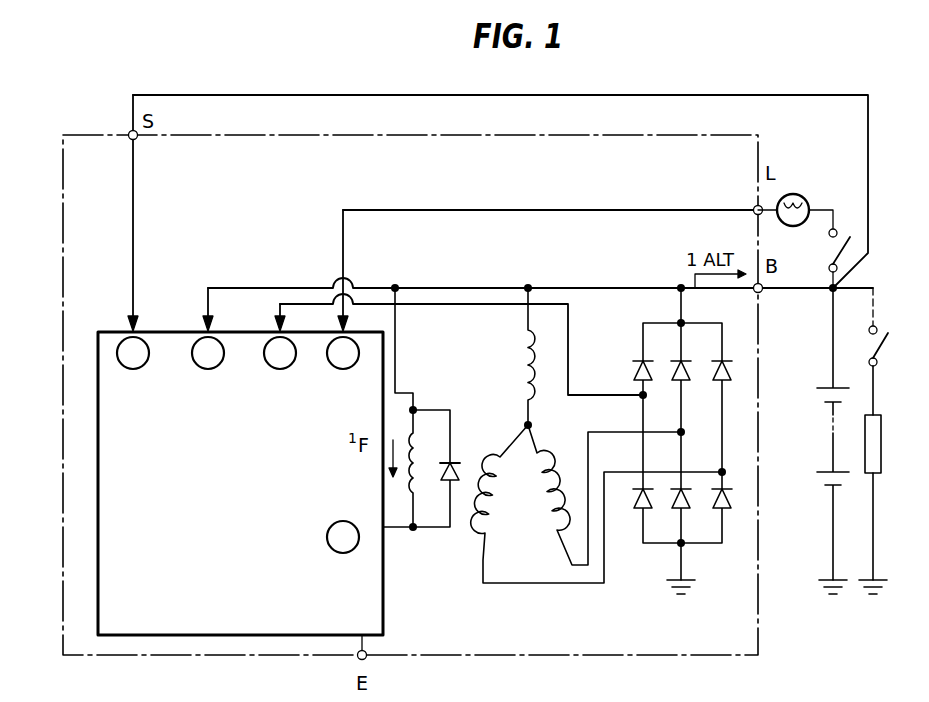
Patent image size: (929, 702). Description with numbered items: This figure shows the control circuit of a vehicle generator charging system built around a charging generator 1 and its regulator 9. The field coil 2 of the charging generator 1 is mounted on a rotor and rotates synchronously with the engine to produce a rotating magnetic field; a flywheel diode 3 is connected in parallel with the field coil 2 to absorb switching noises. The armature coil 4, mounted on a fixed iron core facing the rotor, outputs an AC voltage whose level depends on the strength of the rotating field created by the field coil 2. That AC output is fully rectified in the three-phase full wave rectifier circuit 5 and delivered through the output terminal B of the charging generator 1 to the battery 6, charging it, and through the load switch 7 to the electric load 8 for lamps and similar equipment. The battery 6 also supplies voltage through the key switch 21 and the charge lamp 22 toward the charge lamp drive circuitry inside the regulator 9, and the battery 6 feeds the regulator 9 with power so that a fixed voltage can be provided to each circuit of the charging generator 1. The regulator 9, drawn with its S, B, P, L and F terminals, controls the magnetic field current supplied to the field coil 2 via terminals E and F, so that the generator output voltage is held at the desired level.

The charging generator 1 is at (63, 452).
The field coil 2 is at (420, 463).
The flywheel diode 3 is at (457, 464).
The armature coil 4 is at (520, 565).
The 3-phase full wave rectifier circuit 5 is at (697, 553).
The battery 6 is at (832, 442).
The load switch 7 is at (880, 350).
The electric load 8 is at (880, 450).
The regulator 9 is at (158, 332).
The key switch 21 is at (838, 253).
The charge lamp 22 is at (805, 200).